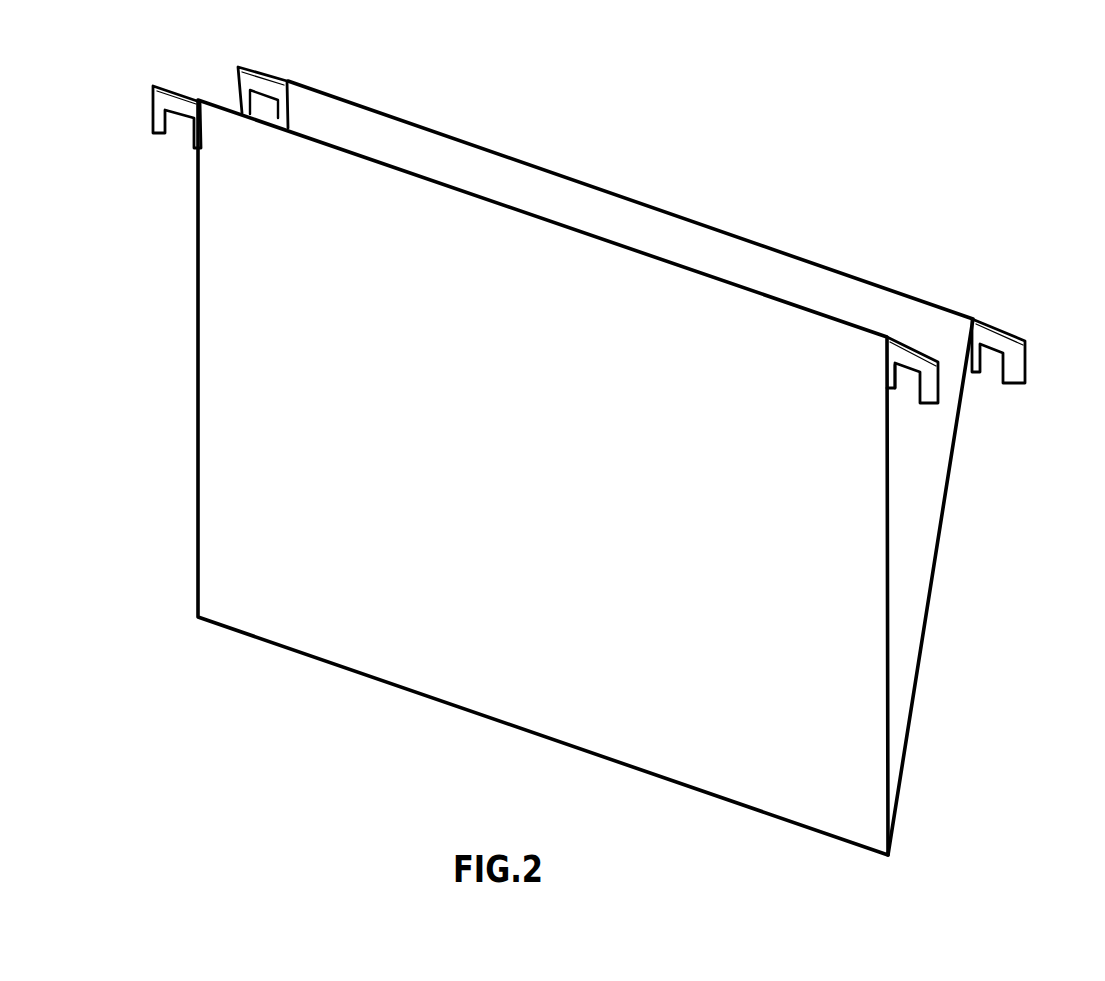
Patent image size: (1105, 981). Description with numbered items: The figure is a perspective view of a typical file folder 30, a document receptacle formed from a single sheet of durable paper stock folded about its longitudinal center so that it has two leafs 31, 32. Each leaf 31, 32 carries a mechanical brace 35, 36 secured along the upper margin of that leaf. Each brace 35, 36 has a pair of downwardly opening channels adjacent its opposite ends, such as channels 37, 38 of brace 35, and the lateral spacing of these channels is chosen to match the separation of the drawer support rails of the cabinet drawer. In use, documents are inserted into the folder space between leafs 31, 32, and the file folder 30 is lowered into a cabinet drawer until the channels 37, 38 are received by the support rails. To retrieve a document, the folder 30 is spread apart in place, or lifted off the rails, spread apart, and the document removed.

The file folder 30 is at (595, 461).
The leaf 31 is at (788, 593).
The leaf 32 is at (675, 252).
The mechanical brace 35 is at (905, 338).
The mechanical brace 36 is at (1008, 327).
The channel 37 is at (176, 113).
The channel 38 is at (905, 377).